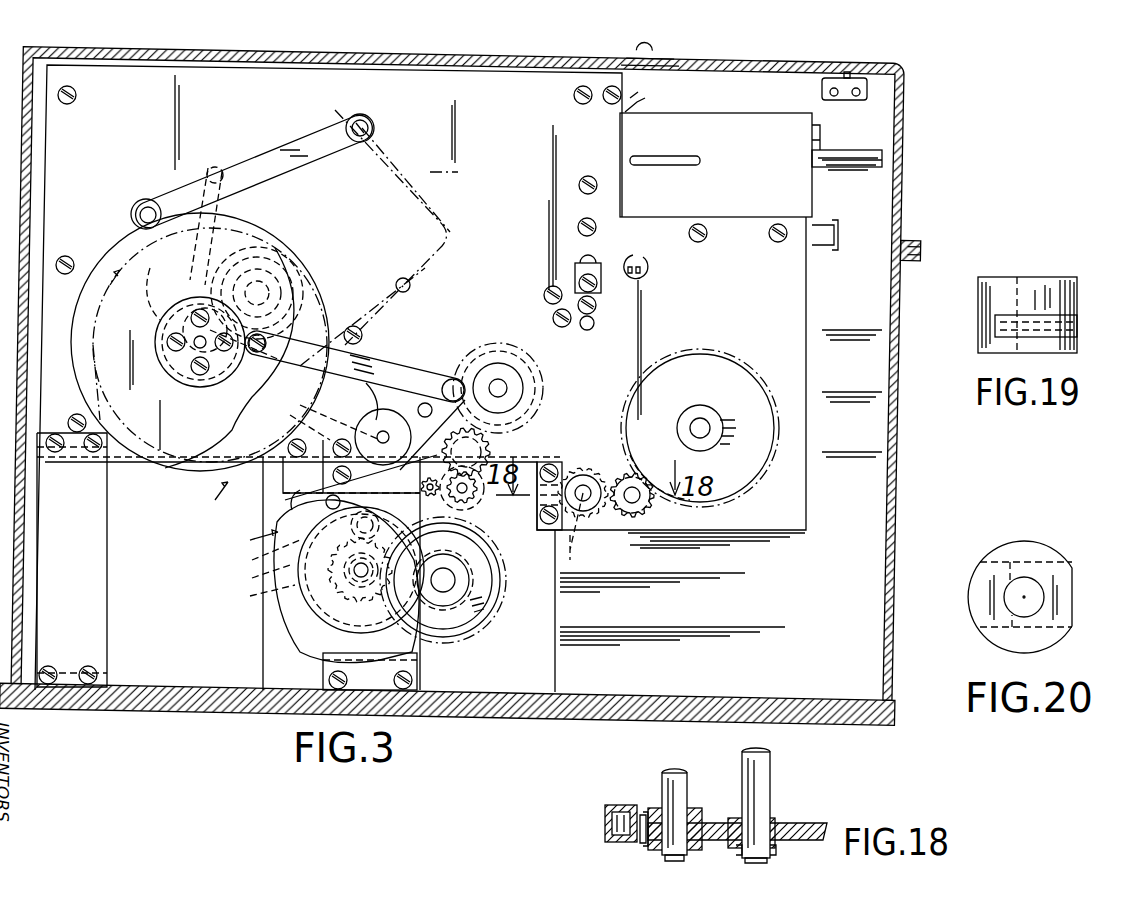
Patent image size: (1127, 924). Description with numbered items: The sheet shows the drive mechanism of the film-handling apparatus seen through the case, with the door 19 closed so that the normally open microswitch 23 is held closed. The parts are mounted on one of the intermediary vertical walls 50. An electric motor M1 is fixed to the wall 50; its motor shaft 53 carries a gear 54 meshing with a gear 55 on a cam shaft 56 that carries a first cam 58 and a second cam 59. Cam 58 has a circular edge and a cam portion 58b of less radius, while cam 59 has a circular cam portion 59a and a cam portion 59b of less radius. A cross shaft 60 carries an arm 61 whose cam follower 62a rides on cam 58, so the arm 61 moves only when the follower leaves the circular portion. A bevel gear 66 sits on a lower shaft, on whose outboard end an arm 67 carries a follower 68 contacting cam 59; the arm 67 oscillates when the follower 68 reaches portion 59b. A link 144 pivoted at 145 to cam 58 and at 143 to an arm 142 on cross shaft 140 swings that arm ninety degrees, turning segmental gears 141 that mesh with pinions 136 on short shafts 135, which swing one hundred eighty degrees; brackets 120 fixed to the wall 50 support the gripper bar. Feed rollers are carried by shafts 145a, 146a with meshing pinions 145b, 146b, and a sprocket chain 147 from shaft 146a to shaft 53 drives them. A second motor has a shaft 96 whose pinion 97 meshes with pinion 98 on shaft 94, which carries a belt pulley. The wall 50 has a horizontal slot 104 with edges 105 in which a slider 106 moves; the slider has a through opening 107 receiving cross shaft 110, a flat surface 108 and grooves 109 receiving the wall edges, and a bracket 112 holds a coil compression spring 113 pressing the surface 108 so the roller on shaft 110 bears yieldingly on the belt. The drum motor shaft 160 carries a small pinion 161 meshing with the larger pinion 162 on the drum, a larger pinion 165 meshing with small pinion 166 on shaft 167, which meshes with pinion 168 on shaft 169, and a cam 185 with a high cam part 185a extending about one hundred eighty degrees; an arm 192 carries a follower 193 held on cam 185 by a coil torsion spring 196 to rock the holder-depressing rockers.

In FIG. 3, the door 19 is at (798, 54).
In FIG. 3, the microswitch 23 is at (868, 90).
In FIG. 3, the intermediary vertical wall 50 is at (797, 337).
In FIG. 18, the intermediary vertical wall 50 is at (815, 826).
In FIG. 3, the electric motor M1 is at (608, 218).
In FIG. 3, the cross shaft 60 is at (374, 126).
In FIG. 3, the arm 61 is at (245, 162).
In FIG. 3, the cam follower 62a is at (148, 208).
In FIG. 3, the bevel gear 66 is at (205, 208).
In FIG. 3, the cam 58 is at (93, 235).
In FIG. 3, the cam portion 58b is at (240, 418).
In FIG. 3, the second cam 59 is at (169, 400).
In FIG. 3, the circular cam portion 59a is at (92, 314).
In FIG. 3, the cam portion 59b is at (198, 345).
In FIG. 3, the arm 67 is at (165, 260).
In FIG. 3, the follower 68 is at (202, 290).
In FIG. 3, the gear 55 is at (245, 273).
In FIG. 3, the gear 54 is at (262, 250).
In FIG. 3, the motor shaft 53 is at (285, 270).
In FIG. 3, the cam shaft 56 is at (195, 345).
In FIG. 3, the pivot 145 is at (238, 365).
In FIG. 3, the sprocket chain 147 is at (315, 410).
In FIG. 3, the arm 142 is at (388, 406).
In FIG. 3, the pivot 143 is at (448, 378).
In FIG. 3, the link 144 is at (372, 362).
In FIG. 3, the cross shaft 140 is at (368, 412).
In FIG. 3, the brackets 120 is at (393, 435).
In FIG. 3, the short shafts 135 is at (500, 378).
In FIG. 3, the pinion 136 is at (472, 350).
In FIG. 3, the segmental gears 141 is at (488, 450).
In FIG. 3, the shaft 146a is at (431, 497).
In FIG. 3, the pinion 146b is at (455, 460).
In FIG. 3, the shaft 145a is at (465, 510).
In FIG. 3, the pinion 145b is at (478, 498).
In FIG. 3, the motor shaft 160 is at (350, 582).
In FIG. 3, the small pinion 161 is at (358, 580).
In FIG. 3, the larger pinion 162 is at (492, 615).
In FIG. 3, the small pinion 166 is at (400, 568).
In FIG. 3, the pinion 168 is at (352, 526).
In FIG. 3, the shaft 169 is at (358, 532).
In FIG. 3, the arm 192 is at (290, 498).
In FIG. 3, the follower 193 is at (326, 500).
In FIG. 3, the shaft 167 is at (342, 476).
In FIG. 3, the cam 185 is at (245, 540).
In FIG. 3, the high cam part 185a is at (250, 558).
In FIG. 3, the coil torsion spring 196 is at (249, 577).
In FIG. 3, the larger pinion 165 is at (249, 594).
In FIG. 3, the motor shaft 96 is at (703, 425).
In FIG. 3, the pinion 97 is at (628, 447).
In FIG. 3, the pinion 98 is at (652, 505).
In FIG. 3, the second shaft 94 is at (630, 500).
In FIG. 18, the second shaft 94 is at (768, 775).
In FIG. 3, the horizontal slots 104 is at (578, 480).
In FIG. 3, the horizontal edges 105 is at (577, 529).
In FIG. 19, the slider 106 is at (1023, 271).
In FIG. 20, the slider 106 is at (1066, 534).
In FIG. 19, the through opening 107 is at (1065, 300).
In FIG. 20, the through opening 107 is at (1035, 597).
In FIG. 19, the flat surface 108 is at (1078, 300).
In FIG. 20, the flat surface 108 is at (1072, 616).
In FIG. 18, the flat surface 108 is at (650, 840).
In FIG. 19, the grooves 109 is at (1078, 330).
In FIG. 20, the grooves 109 is at (1012, 632).
In FIG. 18, the cross shaft 110 is at (658, 790).
In FIG. 18, the brackets 112 is at (605, 820).
In FIG. 18, the coil compression springs 113 is at (615, 838).